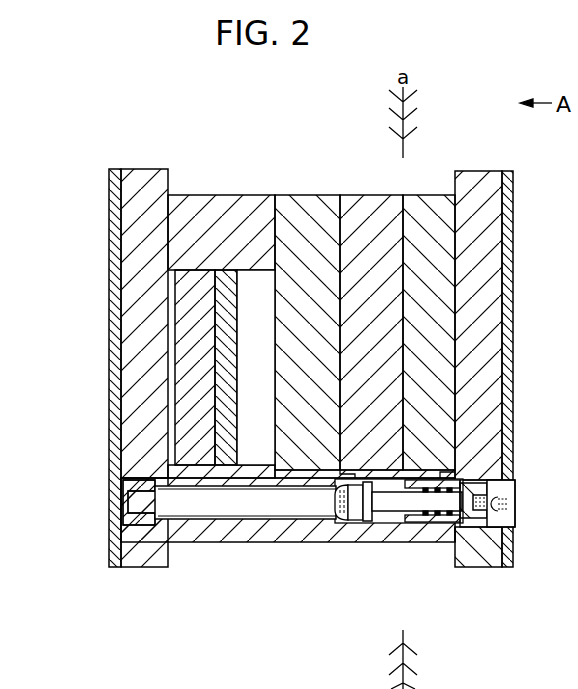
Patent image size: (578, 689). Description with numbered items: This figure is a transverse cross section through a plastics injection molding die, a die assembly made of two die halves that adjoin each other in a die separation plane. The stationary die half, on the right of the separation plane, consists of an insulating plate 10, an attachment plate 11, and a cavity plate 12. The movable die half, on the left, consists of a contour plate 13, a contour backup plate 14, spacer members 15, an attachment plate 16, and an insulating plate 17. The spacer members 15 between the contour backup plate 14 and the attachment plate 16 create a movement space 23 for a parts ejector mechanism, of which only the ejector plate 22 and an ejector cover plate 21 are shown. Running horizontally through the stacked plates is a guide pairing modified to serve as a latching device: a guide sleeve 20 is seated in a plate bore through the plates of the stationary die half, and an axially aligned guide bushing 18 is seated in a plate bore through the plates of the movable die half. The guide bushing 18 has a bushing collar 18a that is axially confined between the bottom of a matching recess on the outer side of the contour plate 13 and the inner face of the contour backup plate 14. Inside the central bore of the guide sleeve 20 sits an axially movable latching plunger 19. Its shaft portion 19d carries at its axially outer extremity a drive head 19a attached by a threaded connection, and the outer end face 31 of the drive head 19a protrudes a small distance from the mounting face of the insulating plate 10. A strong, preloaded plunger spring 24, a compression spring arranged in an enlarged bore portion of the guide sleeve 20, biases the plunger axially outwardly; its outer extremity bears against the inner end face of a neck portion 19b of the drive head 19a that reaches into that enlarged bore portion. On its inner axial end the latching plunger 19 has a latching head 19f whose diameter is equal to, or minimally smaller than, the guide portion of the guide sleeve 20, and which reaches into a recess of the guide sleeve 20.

The insulating plate 10 is at (515, 206).
The attachment plate 11 is at (470, 178).
The cavity plate 12 is at (433, 280).
The contour plate 13 is at (375, 215).
The contour backup plate 14 is at (306, 232).
The spacer members 15 is at (236, 212).
The attachment plate 16 is at (147, 178).
The insulating plate 17 is at (112, 238).
The guide bushing 18 is at (297, 530).
The bushing collar 18a is at (347, 530).
The latching plunger 19 is at (520, 528).
The drive head 19a is at (500, 490).
The neck portion 19b is at (465, 493).
The shaft portion 19d is at (424, 505).
The latching head 19f is at (357, 513).
The guide sleeve 20 is at (417, 520).
The ejector cover plate 21 is at (185, 333).
The ejector plate 22 is at (223, 385).
The movement space 23 is at (252, 430).
The plunger spring 24 is at (458, 532).
The outer end face 31 is at (526, 519).